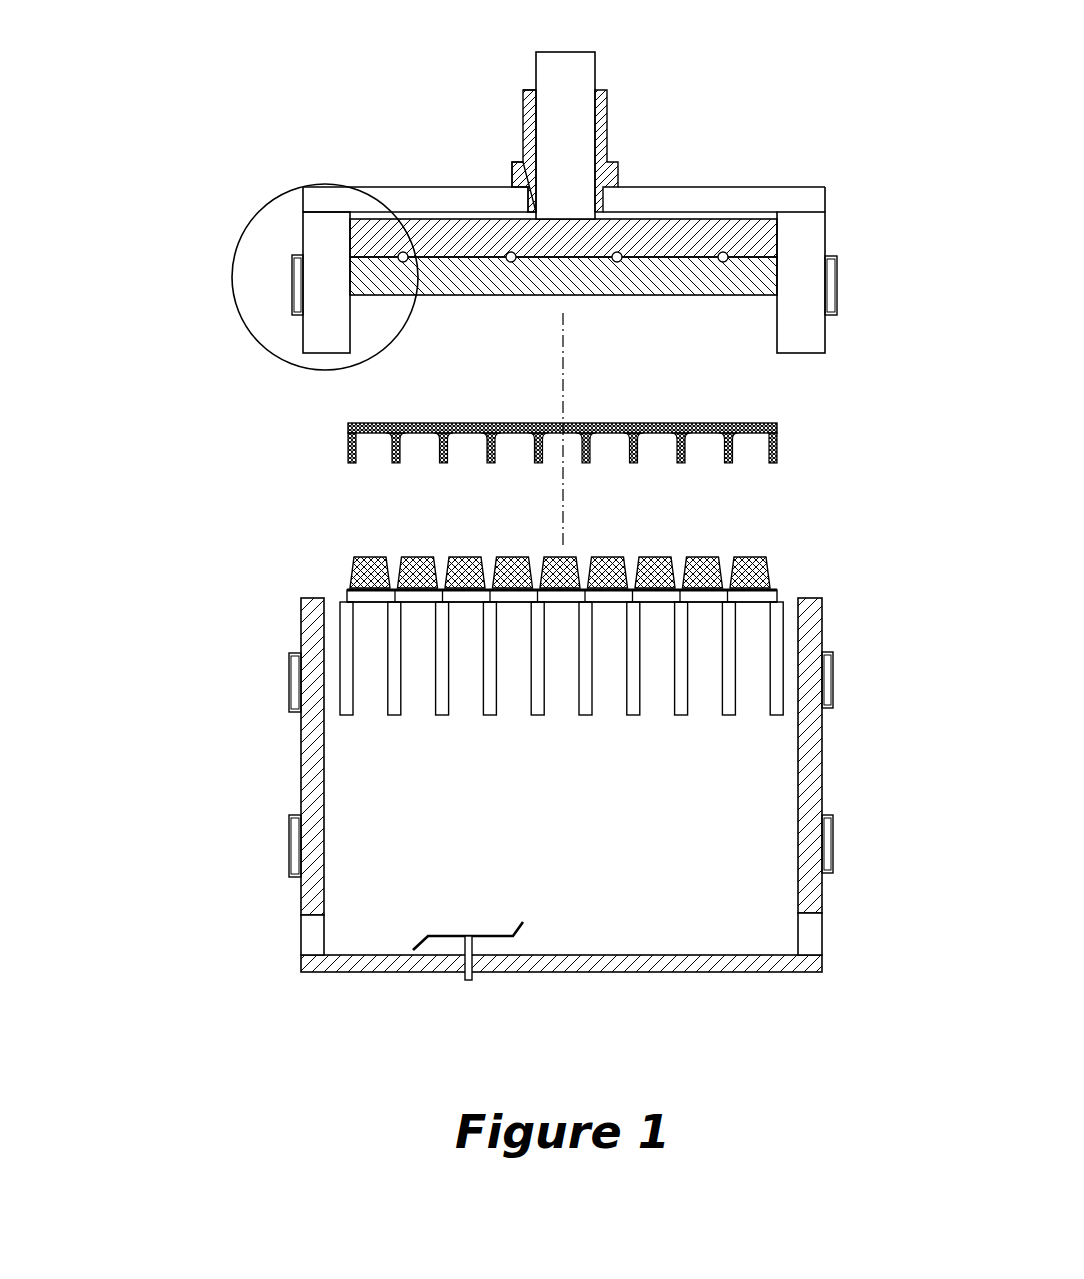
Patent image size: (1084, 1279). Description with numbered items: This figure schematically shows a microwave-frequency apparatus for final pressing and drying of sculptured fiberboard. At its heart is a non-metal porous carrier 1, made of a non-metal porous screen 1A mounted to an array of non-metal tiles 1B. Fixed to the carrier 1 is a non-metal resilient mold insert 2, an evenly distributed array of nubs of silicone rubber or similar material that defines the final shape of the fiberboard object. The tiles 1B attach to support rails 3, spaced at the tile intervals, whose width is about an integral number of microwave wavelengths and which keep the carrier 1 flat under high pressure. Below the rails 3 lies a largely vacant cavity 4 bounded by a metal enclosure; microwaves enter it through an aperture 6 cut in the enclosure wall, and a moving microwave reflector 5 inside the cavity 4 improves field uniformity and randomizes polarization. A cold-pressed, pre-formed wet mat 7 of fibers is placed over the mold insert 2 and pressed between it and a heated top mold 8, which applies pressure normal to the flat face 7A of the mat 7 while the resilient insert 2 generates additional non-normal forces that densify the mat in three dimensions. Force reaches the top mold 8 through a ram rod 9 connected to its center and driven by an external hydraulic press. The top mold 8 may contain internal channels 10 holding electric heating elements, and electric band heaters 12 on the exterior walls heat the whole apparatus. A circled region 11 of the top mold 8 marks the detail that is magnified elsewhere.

The non-metal porous carrier 1 is at (790, 580).
The non-metal porous screen 1A is at (438, 600).
The non-metal tiles 1B is at (517, 602).
The non-metal resilient mold insert 2 is at (345, 553).
The support rails 3 is at (678, 717).
The cavity 4 is at (553, 816).
The moving microwave reflector 5 is at (525, 922).
The aperture 6 is at (301, 937).
The pre-formed wet mat 7 is at (416, 422).
The flat face 7A is at (620, 423).
The heated top mold 8 is at (440, 207).
The ram rod 9 is at (577, 52).
The internal channels 10 is at (723, 252).
The circled region 11 is at (233, 278).
The electric band heaters 12 is at (837, 290).